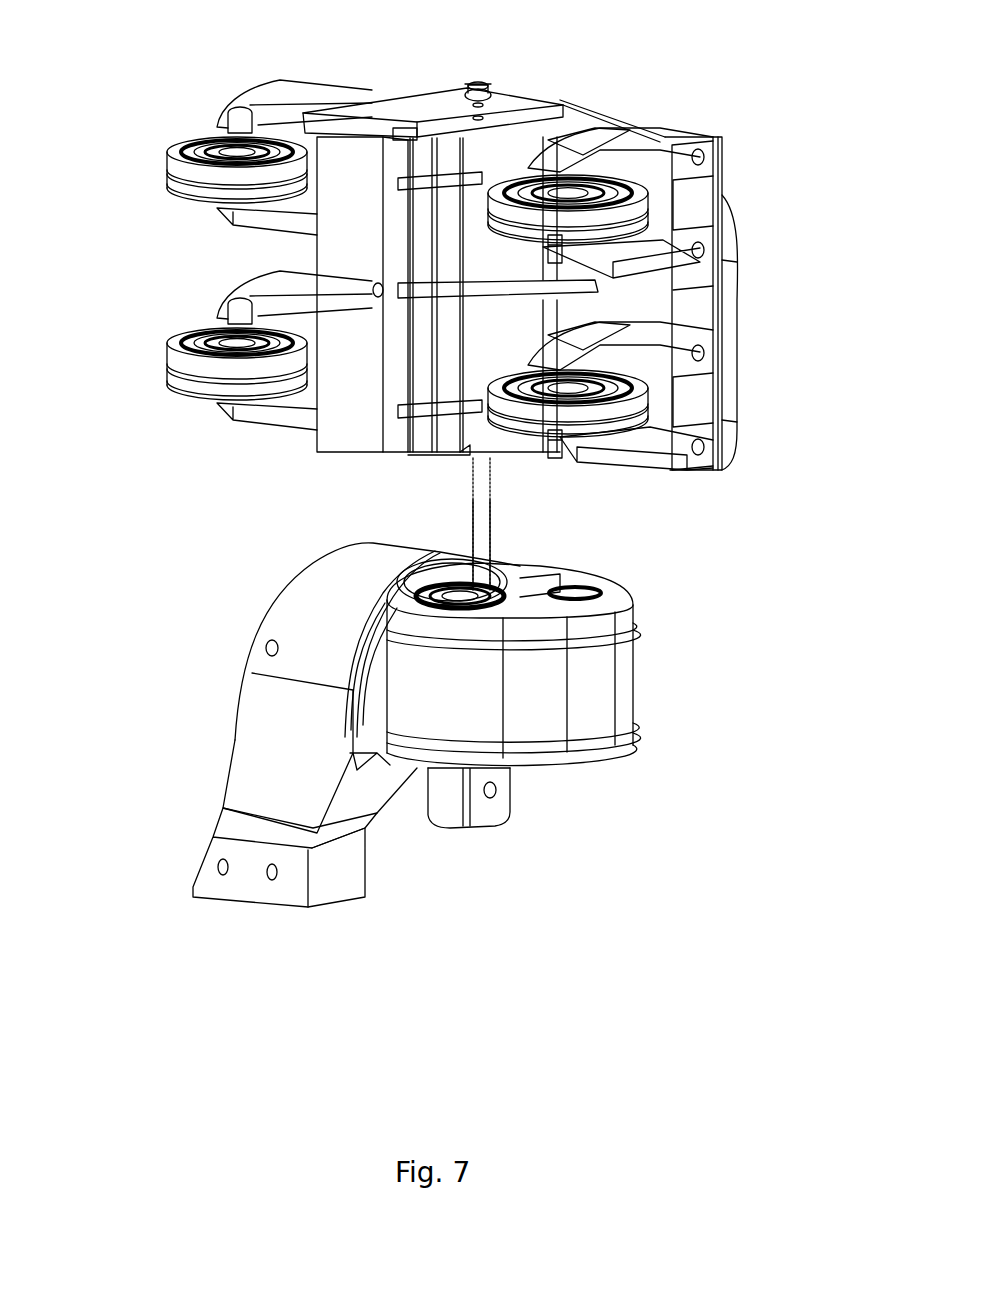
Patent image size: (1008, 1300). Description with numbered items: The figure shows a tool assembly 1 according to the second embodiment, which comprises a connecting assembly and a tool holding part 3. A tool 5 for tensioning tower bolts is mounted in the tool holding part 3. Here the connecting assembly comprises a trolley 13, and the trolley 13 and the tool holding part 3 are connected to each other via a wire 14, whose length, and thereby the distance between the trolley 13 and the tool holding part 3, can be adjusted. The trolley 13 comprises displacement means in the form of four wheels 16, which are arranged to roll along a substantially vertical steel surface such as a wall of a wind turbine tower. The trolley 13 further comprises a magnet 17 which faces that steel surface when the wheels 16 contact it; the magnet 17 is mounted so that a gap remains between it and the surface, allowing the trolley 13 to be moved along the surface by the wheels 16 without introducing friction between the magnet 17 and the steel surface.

The tool assembly 1 is at (788, 528).
The tool holding part 3 is at (598, 695).
The tool 5 is at (273, 748).
The trolley 13 is at (737, 188).
The wire 14 is at (482, 529).
The wheels 16 is at (557, 207).
The magnet 17 is at (358, 377).